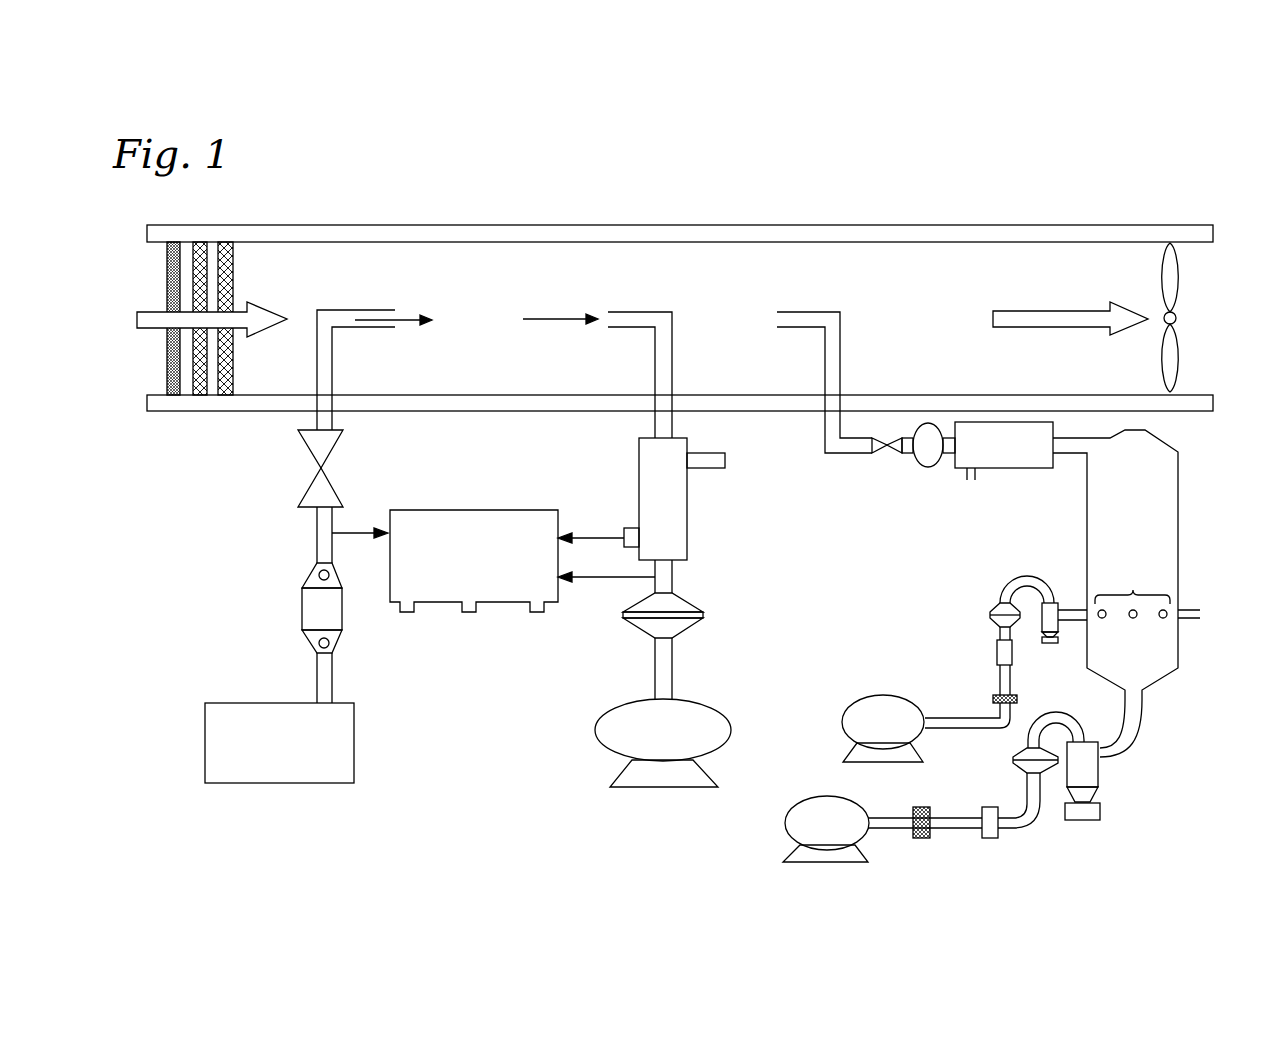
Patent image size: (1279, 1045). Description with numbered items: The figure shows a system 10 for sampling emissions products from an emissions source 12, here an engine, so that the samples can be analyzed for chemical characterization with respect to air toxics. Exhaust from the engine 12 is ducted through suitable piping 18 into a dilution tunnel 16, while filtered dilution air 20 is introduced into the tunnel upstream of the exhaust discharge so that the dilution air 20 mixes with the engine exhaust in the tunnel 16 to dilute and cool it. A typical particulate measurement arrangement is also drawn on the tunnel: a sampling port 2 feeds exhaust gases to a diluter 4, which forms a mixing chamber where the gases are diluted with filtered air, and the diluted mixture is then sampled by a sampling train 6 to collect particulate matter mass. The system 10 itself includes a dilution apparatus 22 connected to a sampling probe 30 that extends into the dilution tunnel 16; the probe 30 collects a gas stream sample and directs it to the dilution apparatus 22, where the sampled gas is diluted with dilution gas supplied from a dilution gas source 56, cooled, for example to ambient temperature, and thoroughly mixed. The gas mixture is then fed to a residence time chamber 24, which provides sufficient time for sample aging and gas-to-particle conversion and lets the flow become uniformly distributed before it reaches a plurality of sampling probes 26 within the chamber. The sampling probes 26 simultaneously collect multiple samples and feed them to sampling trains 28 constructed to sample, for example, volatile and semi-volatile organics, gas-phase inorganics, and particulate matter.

The dilution tunnel 16 is at (513, 225).
The filtered dilution air 20 is at (270, 306).
The sampling port 2 is at (633, 310).
The sampling probe 30 is at (827, 310).
The sampling train 6 is at (603, 537).
The diluter 4 is at (688, 520).
The dilution apparatus 22 is at (1005, 468).
The residence time chamber 24 is at (1190, 495).
The dilution gas source 56 is at (968, 503).
The piping 18 is at (313, 538).
The sampling probes 26 is at (1133, 590).
The emissions source 12 is at (250, 783).
The sampling trains 28 is at (849, 690).
The system 10 is at (1165, 775).